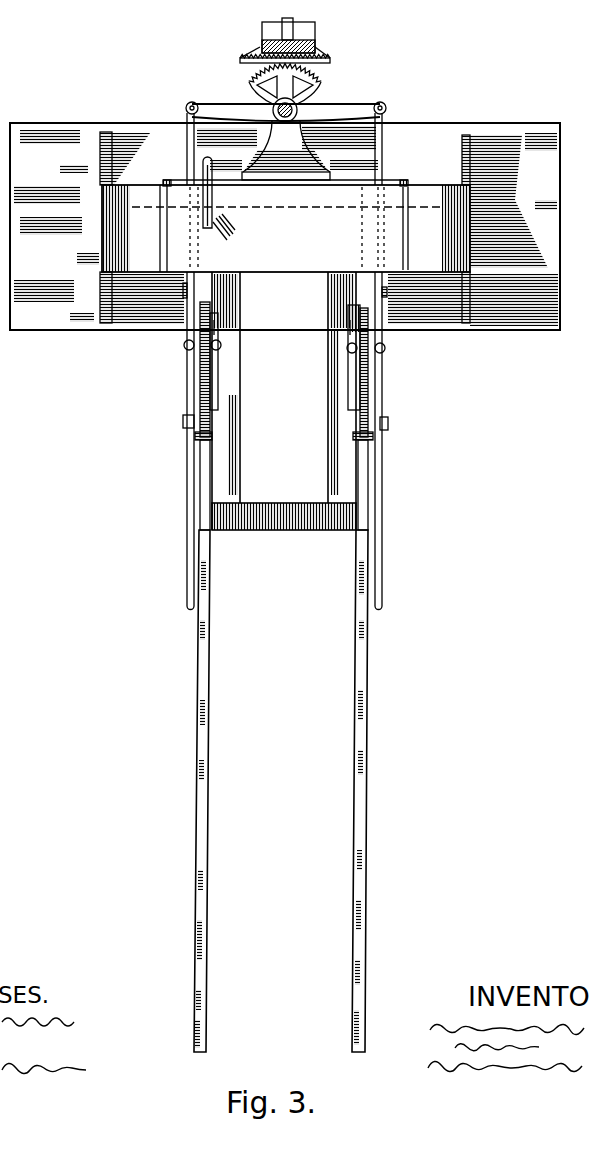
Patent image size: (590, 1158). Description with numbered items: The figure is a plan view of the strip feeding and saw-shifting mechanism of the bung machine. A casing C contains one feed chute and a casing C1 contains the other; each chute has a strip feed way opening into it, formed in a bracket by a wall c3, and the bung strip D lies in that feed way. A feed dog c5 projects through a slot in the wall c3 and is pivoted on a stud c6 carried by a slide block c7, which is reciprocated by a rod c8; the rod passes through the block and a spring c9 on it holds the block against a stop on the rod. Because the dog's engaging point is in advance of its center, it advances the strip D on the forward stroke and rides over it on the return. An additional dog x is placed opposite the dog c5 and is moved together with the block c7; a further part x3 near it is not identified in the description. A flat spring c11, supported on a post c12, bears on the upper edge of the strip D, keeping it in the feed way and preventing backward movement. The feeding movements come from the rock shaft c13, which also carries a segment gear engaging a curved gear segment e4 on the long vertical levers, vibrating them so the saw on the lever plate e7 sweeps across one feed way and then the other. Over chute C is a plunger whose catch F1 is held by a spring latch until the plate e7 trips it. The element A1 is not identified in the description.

The frame A1 is at (100, 263).
The casing C is at (286, 226).
The casing C1 is at (436, 228).
The catch F1 is at (219, 198).
The feed dog c5 is at (383, 172).
The reciprocating rod c8 is at (187, 146).
The spring c9 is at (285, 84).
The rock shaft c13 is at (298, 107).
The segment of curved gear e4 is at (332, 54).
The plate e7 is at (290, 23).
The slide block c7 is at (397, 493).
The flat spring c11 is at (397, 378).
The rod or stud c6 is at (397, 354).
The roller x3 is at (221, 346).
The additional dog x is at (216, 338).
The post c12 is at (195, 433).
The wall c3 is at (198, 466).
The strip D is at (281, 791).